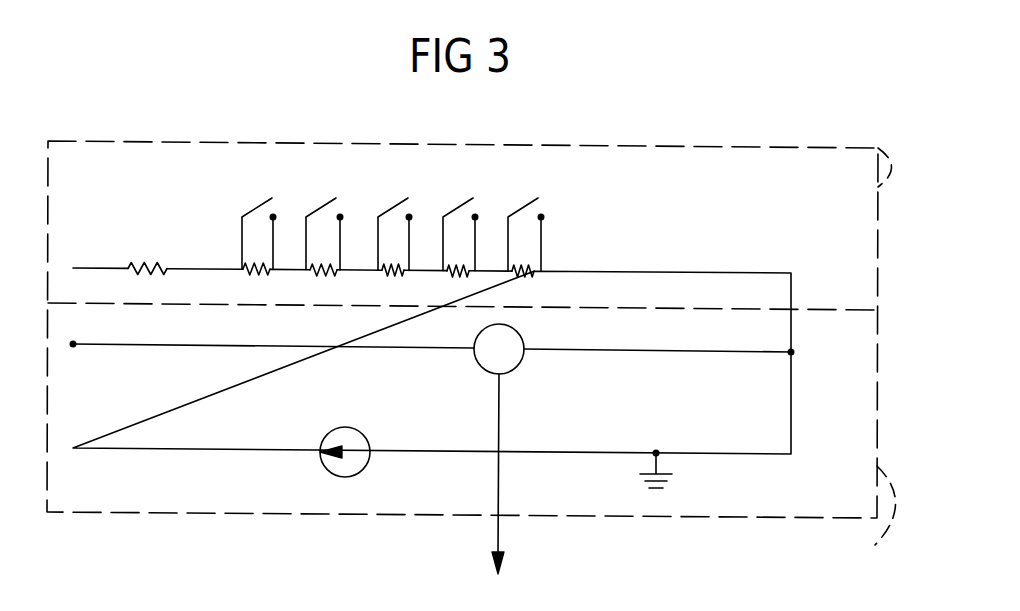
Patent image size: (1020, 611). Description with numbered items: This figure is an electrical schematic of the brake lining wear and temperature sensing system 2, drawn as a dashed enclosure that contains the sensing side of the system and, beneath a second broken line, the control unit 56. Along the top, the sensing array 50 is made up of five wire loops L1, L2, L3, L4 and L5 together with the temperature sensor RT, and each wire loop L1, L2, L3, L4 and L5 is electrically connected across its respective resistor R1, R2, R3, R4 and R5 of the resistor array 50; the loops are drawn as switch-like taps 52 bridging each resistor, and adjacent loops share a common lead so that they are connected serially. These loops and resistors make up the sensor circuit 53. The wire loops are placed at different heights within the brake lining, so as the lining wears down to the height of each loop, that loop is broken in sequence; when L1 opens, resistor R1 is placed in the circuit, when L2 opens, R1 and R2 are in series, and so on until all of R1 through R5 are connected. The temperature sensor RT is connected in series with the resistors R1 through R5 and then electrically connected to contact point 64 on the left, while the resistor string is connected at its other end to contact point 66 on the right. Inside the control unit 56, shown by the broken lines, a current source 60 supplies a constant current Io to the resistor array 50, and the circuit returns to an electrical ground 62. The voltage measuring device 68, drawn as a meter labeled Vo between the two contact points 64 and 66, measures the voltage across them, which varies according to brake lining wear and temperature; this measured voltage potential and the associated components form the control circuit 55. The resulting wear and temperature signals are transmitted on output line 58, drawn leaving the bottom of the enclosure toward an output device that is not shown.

The brake lining wear and temperature sensing system 2 is at (882, 144).
The resistor array 50 is at (557, 263).
The sensing loops (switches L1-L5) 52 is at (417, 212).
The sensor circuit 53 is at (495, 261).
The control circuit 55 is at (629, 353).
The control unit 56 is at (879, 540).
The output line 58 is at (498, 538).
The current source 60 is at (363, 433).
The electrical ground 62 is at (663, 484).
The contact point 64 is at (75, 343).
The contact point 66 is at (795, 352).
The voltage measuring device 68 is at (478, 357).
The temperature sensor RT is at (147, 254).
The resistor R1 is at (541, 276).
The resistor R2 is at (460, 274).
The resistor R3 is at (400, 274).
The resistor R4 is at (316, 274).
The resistor R5 is at (255, 271).
The wire loop L1 is at (525, 205).
The wire loop L2 is at (463, 205).
The wire loop L3 is at (395, 205).
The wire loop L4 is at (325, 206).
The wire loop L5 is at (257, 202).